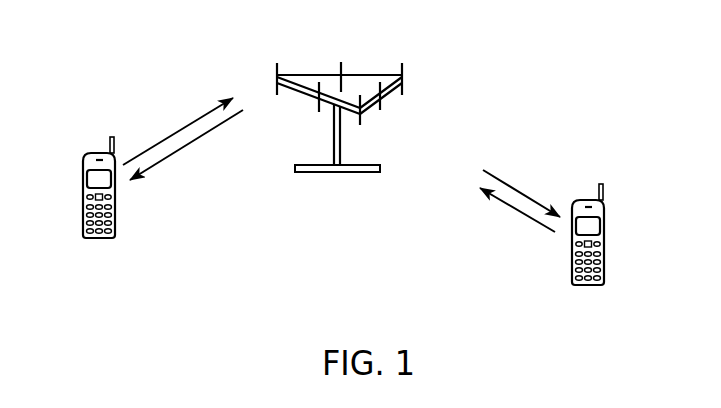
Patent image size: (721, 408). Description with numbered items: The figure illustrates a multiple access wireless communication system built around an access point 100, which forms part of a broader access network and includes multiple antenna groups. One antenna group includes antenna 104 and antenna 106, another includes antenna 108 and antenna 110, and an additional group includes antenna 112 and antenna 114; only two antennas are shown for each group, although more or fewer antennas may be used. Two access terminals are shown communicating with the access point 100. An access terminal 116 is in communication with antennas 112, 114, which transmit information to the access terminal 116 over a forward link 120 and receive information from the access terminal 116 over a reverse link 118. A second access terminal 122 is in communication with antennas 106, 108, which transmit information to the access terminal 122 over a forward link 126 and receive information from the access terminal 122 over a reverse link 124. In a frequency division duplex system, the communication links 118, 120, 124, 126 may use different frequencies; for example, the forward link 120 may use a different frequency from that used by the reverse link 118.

The access point 100 is at (556, 56).
The antenna 104 is at (360, 122).
The antenna 106 is at (380, 106).
The antenna 108 is at (403, 90).
The antenna 110 is at (343, 63).
The antenna 112 is at (277, 69).
The antenna 114 is at (319, 109).
The access terminal 116 is at (83, 178).
The reverse link 118 is at (187, 125).
The forward link 120 is at (176, 155).
The access terminal 122 is at (604, 226).
The reverse link 124 is at (527, 222).
The forward link 126 is at (522, 194).